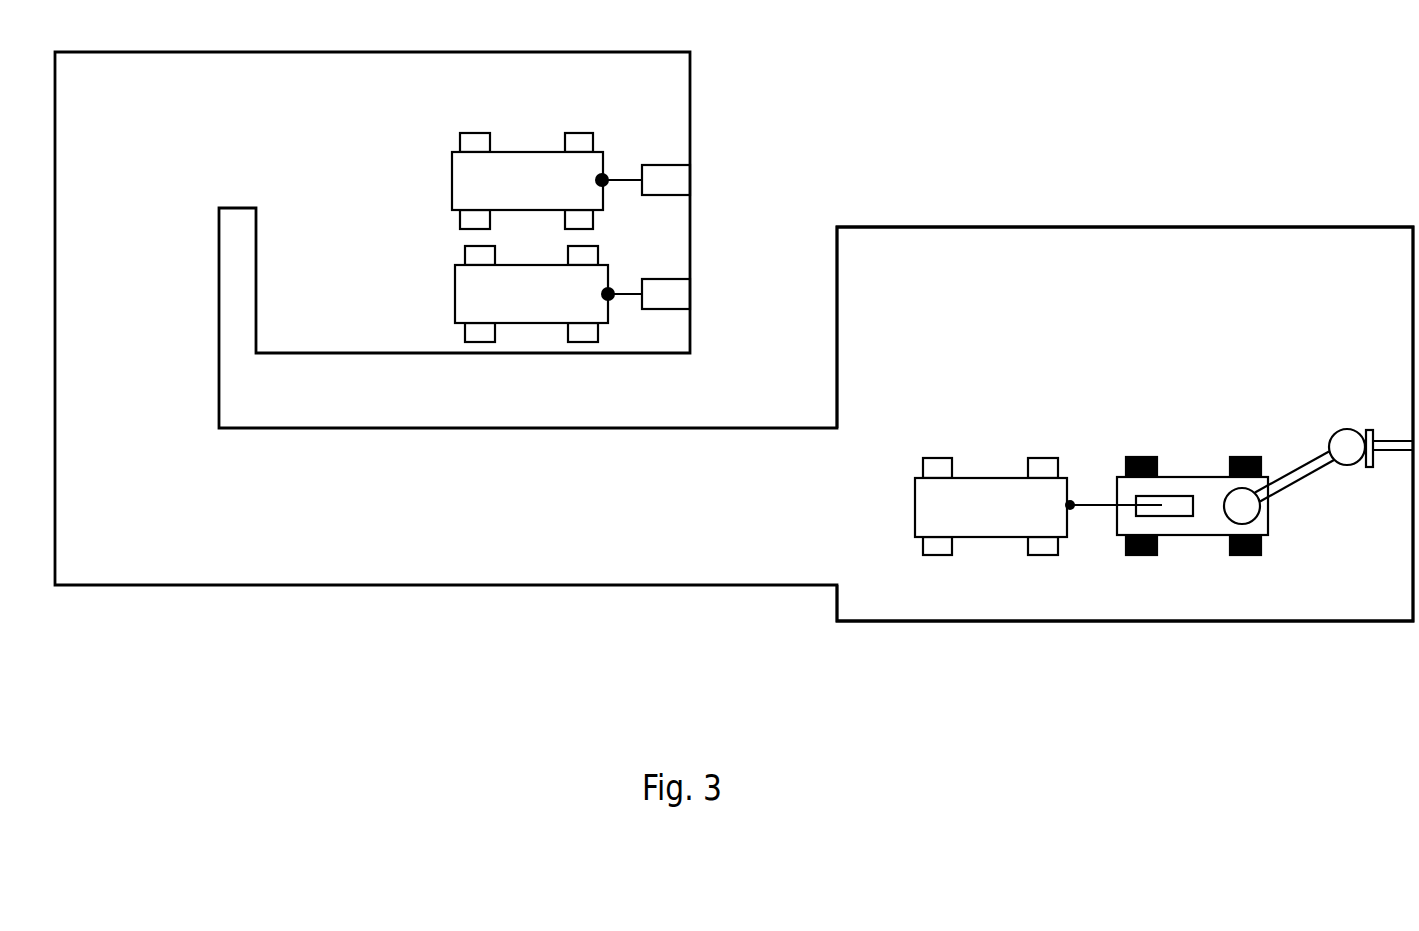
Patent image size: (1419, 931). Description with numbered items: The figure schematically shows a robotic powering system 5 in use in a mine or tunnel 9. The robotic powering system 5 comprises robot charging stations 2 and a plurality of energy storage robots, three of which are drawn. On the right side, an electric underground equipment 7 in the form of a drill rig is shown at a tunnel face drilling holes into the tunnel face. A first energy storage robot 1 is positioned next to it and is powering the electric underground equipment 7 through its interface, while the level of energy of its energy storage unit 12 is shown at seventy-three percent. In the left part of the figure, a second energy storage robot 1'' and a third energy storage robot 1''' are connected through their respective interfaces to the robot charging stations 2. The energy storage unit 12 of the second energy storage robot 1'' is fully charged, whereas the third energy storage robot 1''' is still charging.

The first energy storage robot 1 is at (991, 571).
The second energy storage robot 1'' is at (531, 326).
The third energy storage robot 1''' is at (527, 119).
The robot charging station 2 is at (677, 180).
The robotic powering system 5 is at (812, 176).
The electric underground equipment 7 is at (1238, 424).
The mine or tunnel 9 is at (972, 227).
The energy storage unit 12 is at (945, 522).